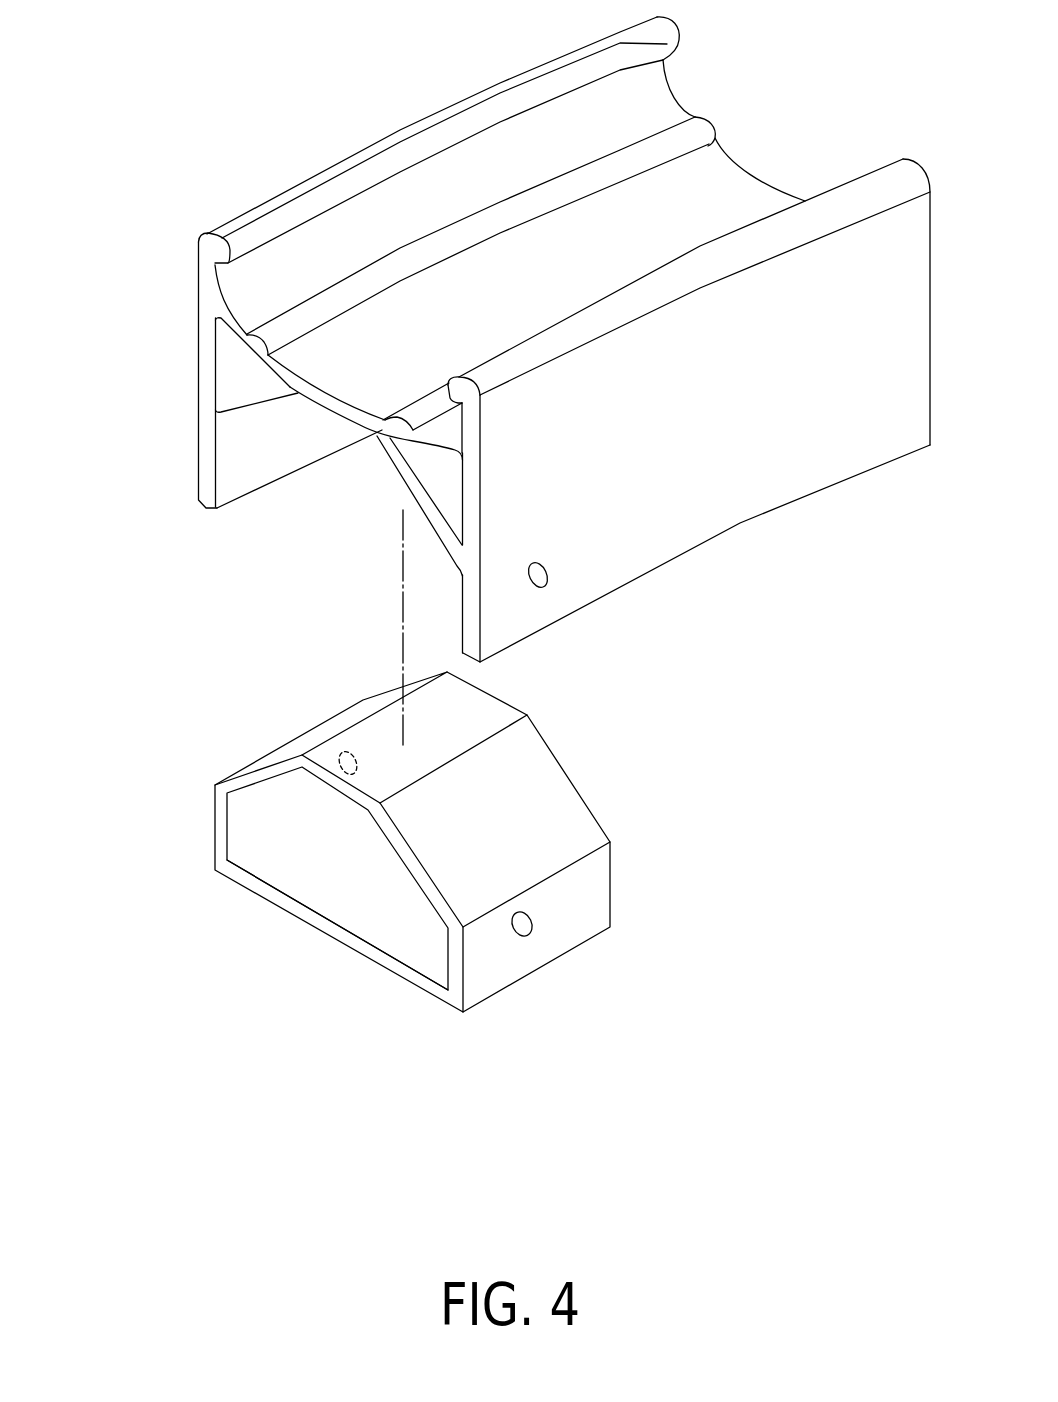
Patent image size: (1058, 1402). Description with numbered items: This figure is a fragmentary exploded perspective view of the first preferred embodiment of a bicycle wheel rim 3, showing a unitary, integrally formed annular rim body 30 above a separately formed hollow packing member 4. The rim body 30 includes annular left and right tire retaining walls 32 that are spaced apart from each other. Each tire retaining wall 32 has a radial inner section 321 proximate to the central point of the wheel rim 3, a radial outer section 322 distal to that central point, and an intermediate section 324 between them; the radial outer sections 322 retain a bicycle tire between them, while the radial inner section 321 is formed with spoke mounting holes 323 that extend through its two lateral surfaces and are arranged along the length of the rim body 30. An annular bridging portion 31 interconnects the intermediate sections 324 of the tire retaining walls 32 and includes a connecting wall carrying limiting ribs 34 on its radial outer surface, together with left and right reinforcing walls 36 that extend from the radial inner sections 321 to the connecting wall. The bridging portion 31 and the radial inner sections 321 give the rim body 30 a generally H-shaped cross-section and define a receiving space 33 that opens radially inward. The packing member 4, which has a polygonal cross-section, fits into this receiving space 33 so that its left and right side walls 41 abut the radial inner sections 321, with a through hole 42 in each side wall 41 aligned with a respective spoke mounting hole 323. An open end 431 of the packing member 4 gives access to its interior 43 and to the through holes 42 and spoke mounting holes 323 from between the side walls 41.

The bicycle wheel rim 3 is at (212, 667).
The rim body 30 is at (849, 500).
The bridging portion 31 is at (383, 330).
The tire retaining wall 32 is at (505, 80).
The radial inner section 321 is at (503, 633).
The radial outer section 322 is at (520, 395).
The spoke mounting hole 323 is at (548, 573).
The intermediate section 324 is at (495, 500).
The receiving space 33 is at (322, 510).
The limiting rib 34 is at (318, 312).
The reinforcing wall 36 is at (257, 407).
The packing member 4 is at (563, 767).
The side wall 41 is at (578, 920).
The through hole 42 is at (523, 935).
The interior 43 is at (318, 853).
The open end 431 is at (423, 958).